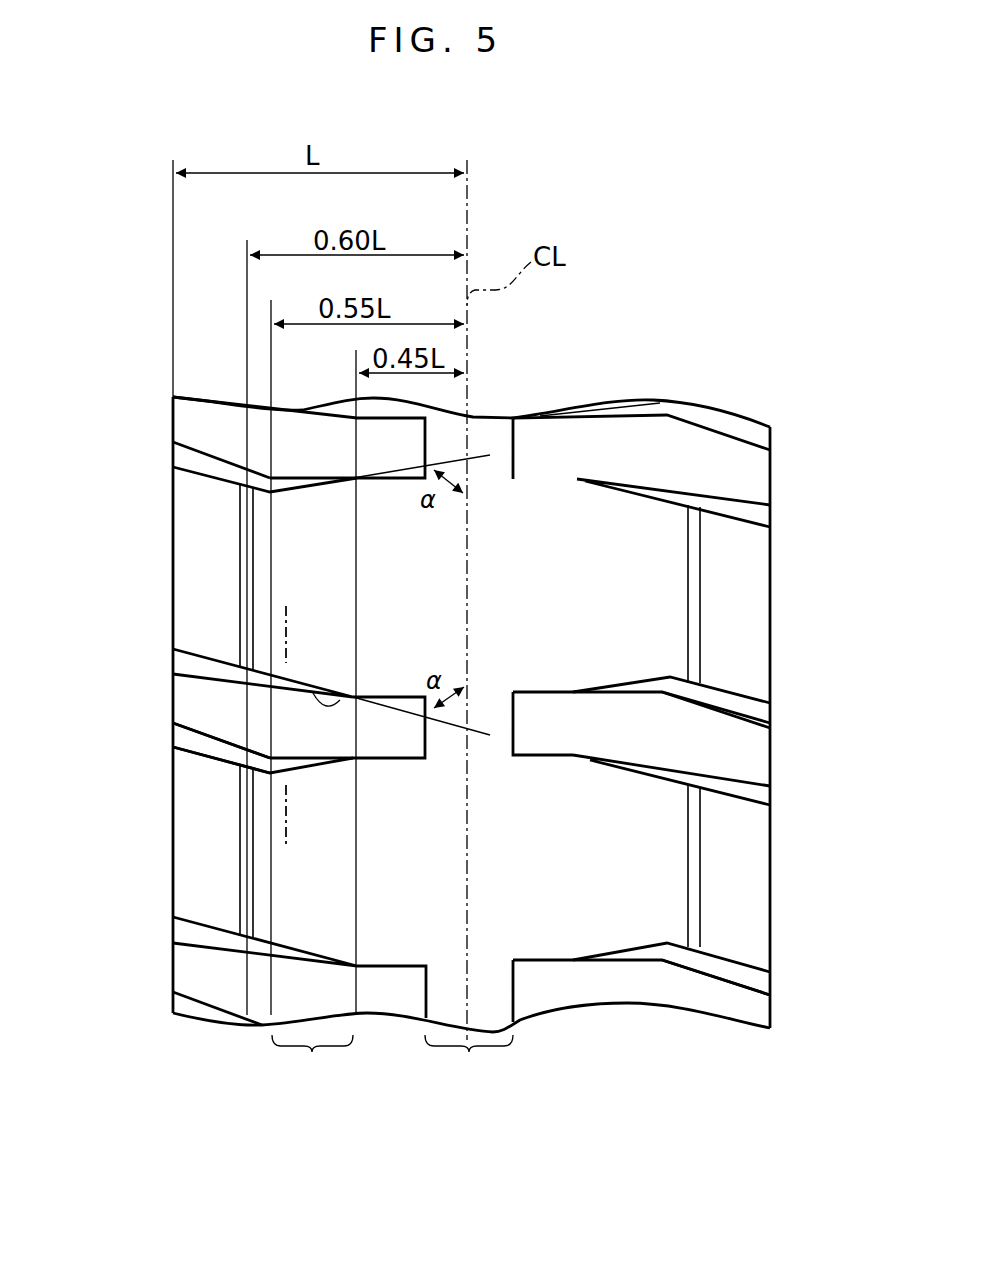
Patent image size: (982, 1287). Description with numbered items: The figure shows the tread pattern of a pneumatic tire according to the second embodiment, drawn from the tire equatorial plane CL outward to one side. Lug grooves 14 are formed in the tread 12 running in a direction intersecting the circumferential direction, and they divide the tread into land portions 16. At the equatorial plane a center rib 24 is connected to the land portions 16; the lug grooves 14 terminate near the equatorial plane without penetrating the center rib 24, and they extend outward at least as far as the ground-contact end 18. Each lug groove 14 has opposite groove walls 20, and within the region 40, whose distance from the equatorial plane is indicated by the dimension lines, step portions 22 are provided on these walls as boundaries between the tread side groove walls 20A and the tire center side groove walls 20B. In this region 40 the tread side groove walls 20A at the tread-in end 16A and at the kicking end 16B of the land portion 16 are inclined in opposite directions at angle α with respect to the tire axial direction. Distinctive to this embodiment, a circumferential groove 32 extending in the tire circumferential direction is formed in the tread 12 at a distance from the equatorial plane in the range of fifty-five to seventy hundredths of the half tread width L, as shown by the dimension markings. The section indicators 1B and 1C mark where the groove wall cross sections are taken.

The tread 12 is at (138, 529).
The lug groove 14 is at (187, 710).
The land portion 16 is at (188, 540).
The tread-in end 16A is at (296, 486).
The kicking end 16B is at (353, 697).
The ground-contact end 18 is at (170, 827).
The groove wall 20 is at (384, 748).
The tread side groove wall 20A is at (225, 752).
The tire center side groove wall 20B is at (220, 738).
The step portion 22 is at (183, 665).
The center rib 24 is at (469, 1063).
The circumferential groove 32 is at (241, 484).
The region 40 is at (312, 1062).
The section line 1B is at (260, 606).
The section line 1C is at (301, 737).